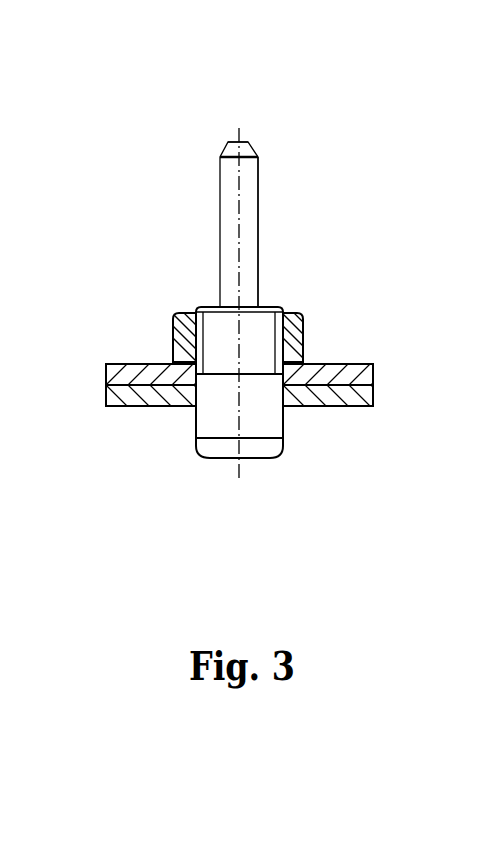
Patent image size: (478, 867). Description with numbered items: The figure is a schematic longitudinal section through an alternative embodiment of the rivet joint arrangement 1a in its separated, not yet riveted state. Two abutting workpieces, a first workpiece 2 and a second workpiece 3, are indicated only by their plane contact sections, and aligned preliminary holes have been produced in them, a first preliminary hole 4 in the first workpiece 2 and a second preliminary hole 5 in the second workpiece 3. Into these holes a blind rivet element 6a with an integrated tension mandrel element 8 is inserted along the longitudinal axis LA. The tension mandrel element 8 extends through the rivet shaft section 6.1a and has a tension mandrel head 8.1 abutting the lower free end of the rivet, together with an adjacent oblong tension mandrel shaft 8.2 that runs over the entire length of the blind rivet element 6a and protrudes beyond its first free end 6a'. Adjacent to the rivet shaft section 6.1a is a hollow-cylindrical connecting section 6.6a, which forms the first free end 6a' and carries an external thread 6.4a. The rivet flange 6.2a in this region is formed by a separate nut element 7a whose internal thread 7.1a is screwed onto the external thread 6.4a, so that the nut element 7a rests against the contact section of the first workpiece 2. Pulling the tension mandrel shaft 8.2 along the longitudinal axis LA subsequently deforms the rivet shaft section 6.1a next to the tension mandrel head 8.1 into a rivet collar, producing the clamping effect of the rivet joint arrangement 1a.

The rivet joint arrangement 1a is at (332, 157).
The first workpiece 2 is at (375, 366).
The second workpiece 3 is at (376, 397).
The first preliminary hole 4 is at (197, 375).
The second preliminary hole 5 is at (193, 395).
The blind rivet element 6a is at (275, 422).
The first free end 6a' is at (283, 190).
The rivet shaft section 6.1a is at (188, 423).
The rivet flange 6.2a is at (157, 323).
The external thread 6.4a is at (278, 327).
The connecting section 6.6a is at (216, 328).
The nut element 7a is at (301, 314).
The internal thread 7.1a is at (286, 311).
The tension mandrel element 8 is at (198, 200).
The tension mandrel head 8.1 is at (227, 452).
The tension mandrel shaft 8.2 is at (219, 157).
The longitudinal axis LA is at (238, 334).